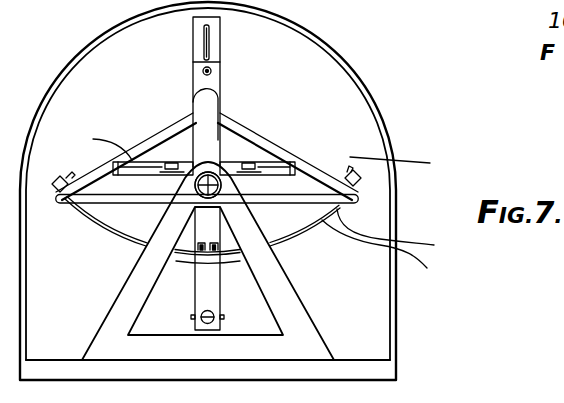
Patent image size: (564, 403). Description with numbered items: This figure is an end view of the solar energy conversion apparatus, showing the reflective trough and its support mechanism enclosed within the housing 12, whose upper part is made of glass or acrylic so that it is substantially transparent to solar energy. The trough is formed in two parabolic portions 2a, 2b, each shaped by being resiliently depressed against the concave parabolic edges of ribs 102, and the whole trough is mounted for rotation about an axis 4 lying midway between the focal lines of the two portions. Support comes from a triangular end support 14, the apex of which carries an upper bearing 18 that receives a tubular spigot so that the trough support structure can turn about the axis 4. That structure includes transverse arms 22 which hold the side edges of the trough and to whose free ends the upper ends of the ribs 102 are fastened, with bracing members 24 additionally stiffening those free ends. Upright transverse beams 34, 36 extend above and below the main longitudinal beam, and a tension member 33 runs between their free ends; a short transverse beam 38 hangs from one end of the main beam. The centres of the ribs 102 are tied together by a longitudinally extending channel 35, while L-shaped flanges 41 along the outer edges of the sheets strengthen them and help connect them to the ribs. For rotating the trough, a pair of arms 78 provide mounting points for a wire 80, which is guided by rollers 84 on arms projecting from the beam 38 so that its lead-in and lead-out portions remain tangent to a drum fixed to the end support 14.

The parabolic portion 2a is at (117, 223).
The parabolic portion 2b is at (317, 222).
The axis 4 is at (196, 190).
The housing 12 is at (385, 121).
The triangular end support 14 is at (290, 300).
The upper bearing 18 is at (196, 193).
The transverse arm 22 is at (173, 122).
The bracing member 24 is at (401, 234).
The tension member 33 is at (210, 52).
The upright transverse beam 34 is at (215, 35).
The longitudinally extending channel 35 is at (213, 253).
The upright transverse beam 36 is at (215, 82).
The short transverse beam 38 is at (210, 132).
The L-shaped flange 41 is at (72, 173).
The arm 78 is at (263, 147).
The wire 80 is at (130, 170).
The roller 84 is at (168, 167).
The rib 102 is at (396, 254).